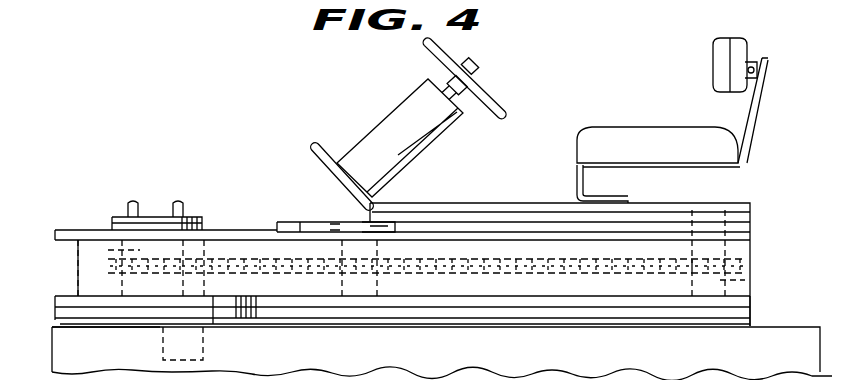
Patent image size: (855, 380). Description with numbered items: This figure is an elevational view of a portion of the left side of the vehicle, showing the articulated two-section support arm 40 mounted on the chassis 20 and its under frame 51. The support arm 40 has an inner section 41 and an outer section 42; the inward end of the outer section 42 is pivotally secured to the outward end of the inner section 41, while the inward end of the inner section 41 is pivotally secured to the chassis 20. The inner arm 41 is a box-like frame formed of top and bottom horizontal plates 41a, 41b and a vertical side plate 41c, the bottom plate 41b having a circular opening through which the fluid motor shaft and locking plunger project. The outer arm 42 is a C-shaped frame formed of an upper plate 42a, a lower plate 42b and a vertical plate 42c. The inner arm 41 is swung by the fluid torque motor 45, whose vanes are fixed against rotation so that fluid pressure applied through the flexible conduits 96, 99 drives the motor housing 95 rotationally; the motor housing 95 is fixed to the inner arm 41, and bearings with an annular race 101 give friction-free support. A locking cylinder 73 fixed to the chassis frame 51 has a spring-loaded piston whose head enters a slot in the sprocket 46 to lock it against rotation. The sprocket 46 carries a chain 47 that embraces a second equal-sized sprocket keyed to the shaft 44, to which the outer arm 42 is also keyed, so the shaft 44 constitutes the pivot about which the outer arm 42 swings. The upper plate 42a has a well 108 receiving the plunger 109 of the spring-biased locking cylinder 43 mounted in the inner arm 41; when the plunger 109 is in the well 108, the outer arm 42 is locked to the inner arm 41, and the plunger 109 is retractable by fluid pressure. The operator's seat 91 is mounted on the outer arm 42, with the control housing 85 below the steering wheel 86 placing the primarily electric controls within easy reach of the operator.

The chassis 20 is at (98, 356).
The articulated two-section support arm 40 is at (108, 268).
The inner section 41 is at (248, 224).
The top horizontal plate 41a is at (496, 235).
The bottom horizontal plate 41b is at (633, 300).
The vertical side plate 41c is at (745, 250).
The outer section 42 is at (301, 215).
The upper plate 42a is at (421, 224).
The lower plate 42b is at (570, 290).
The vertical plate 42c is at (318, 290).
The spring-biased locking cylinder 43 is at (397, 290).
The shaft 44 is at (720, 284).
The fluid torque motor 45 is at (128, 250).
The sprocket 46 is at (78, 270).
The chain 47 is at (506, 285).
The under frame 51 is at (60, 330).
The locking cylinder 73 is at (206, 345).
The control housing 85 is at (418, 140).
The steering wheel 86 is at (492, 93).
The seat 91 is at (656, 120).
The motor housing 95 is at (124, 217).
The flexible conduit 96 is at (142, 204).
The flexible conduit 99 is at (180, 204).
The annular race 101 is at (135, 315).
The well 108 is at (343, 232).
The plunger 109 is at (392, 230).